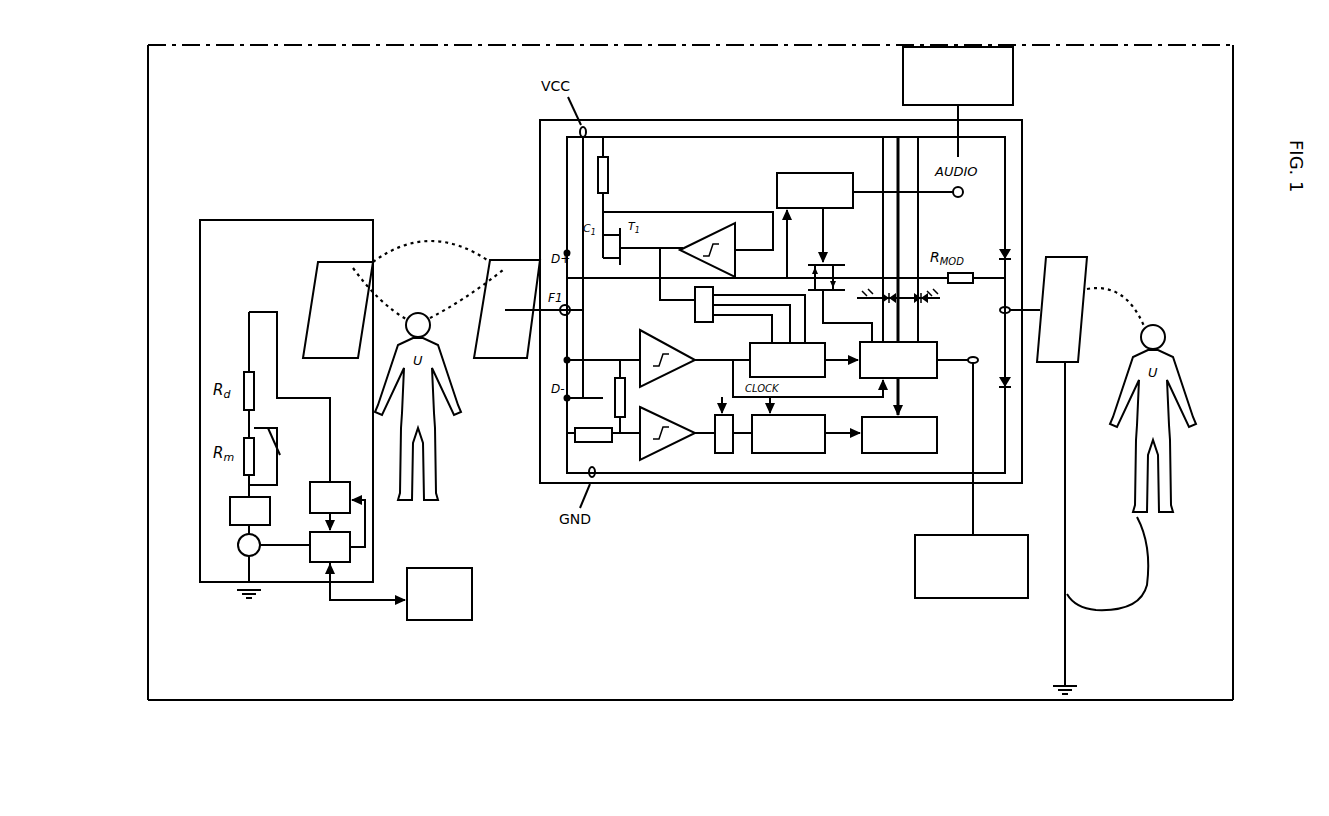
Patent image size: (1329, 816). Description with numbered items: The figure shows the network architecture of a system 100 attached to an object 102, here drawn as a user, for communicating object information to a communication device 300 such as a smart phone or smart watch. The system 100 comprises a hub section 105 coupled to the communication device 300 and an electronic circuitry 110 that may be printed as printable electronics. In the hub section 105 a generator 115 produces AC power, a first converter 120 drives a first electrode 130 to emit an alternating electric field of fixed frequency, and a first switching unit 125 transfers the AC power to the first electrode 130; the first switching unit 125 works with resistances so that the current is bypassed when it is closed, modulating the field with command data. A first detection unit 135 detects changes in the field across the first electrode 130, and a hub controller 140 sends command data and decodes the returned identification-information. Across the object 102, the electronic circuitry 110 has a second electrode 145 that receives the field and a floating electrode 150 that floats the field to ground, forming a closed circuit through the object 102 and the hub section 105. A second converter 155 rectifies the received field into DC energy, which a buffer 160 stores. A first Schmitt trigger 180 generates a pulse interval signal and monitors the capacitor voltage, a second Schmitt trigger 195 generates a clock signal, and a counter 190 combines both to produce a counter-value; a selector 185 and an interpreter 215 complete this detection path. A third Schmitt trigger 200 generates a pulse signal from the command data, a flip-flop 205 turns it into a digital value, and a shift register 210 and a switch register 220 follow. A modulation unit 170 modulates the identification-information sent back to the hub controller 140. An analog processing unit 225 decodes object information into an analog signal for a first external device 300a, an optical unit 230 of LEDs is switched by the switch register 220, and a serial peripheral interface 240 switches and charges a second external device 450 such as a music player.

The system 100 is at (365, 132).
The object 102 is at (468, 393).
The hub section 105 is at (218, 359).
The electronic circuitry 110 is at (761, 108).
The generator 115 is at (238, 548).
The first converter 120 is at (230, 510).
The first switching unit 125 is at (282, 452).
The first electrode 130 is at (312, 297).
The first detection unit 135 is at (353, 509).
The hub controller 140 is at (320, 565).
The second electrode 145 is at (518, 258).
The floating electrode 150 is at (1057, 366).
The second converter 155 is at (566, 247).
The buffer 160 is at (588, 316).
The modulation unit 170 is at (830, 265).
The first Schmitt trigger 180 is at (730, 224).
The selector 185 is at (692, 312).
The counter 190 is at (748, 352).
The second Schmitt trigger 195 is at (658, 383).
The third Schmitt trigger 200 is at (655, 458).
The flip-flop 205 is at (722, 456).
The shift register 210 is at (790, 456).
The interpreter 215 is at (898, 456).
The switch register 220 is at (922, 376).
The analog processing unit 225 is at (814, 172).
The optical unit 230 is at (990, 300).
The serial peripheral interface 240 is at (1001, 299).
The communication device 300 is at (474, 596).
The first external device 300a is at (903, 78).
The second external device 450 is at (915, 569).